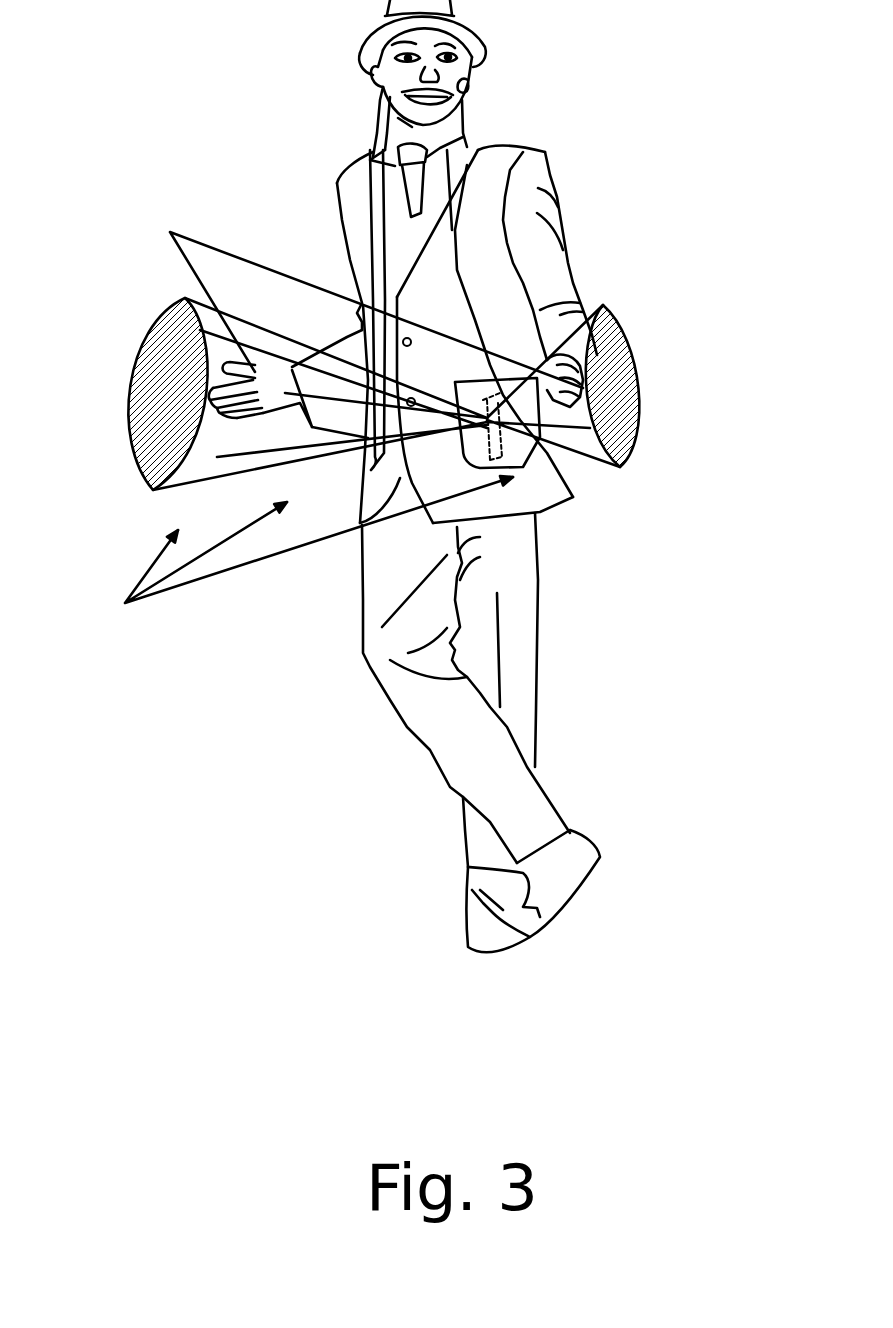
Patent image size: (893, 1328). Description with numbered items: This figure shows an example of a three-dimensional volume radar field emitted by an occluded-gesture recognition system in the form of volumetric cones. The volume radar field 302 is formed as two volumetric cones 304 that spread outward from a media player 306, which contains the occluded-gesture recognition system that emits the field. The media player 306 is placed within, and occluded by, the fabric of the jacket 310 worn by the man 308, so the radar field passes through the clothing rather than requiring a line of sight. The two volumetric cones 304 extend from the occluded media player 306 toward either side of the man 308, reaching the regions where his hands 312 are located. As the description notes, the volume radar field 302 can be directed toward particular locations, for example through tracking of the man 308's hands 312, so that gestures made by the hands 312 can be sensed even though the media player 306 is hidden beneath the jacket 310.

The 3D volume radar field 302 is at (125, 603).
The volumetric cones 304 is at (160, 333).
The media player 306 is at (495, 432).
The man 308 is at (485, 990).
The jacket 310 is at (545, 152).
The hands 312 is at (170, 232).